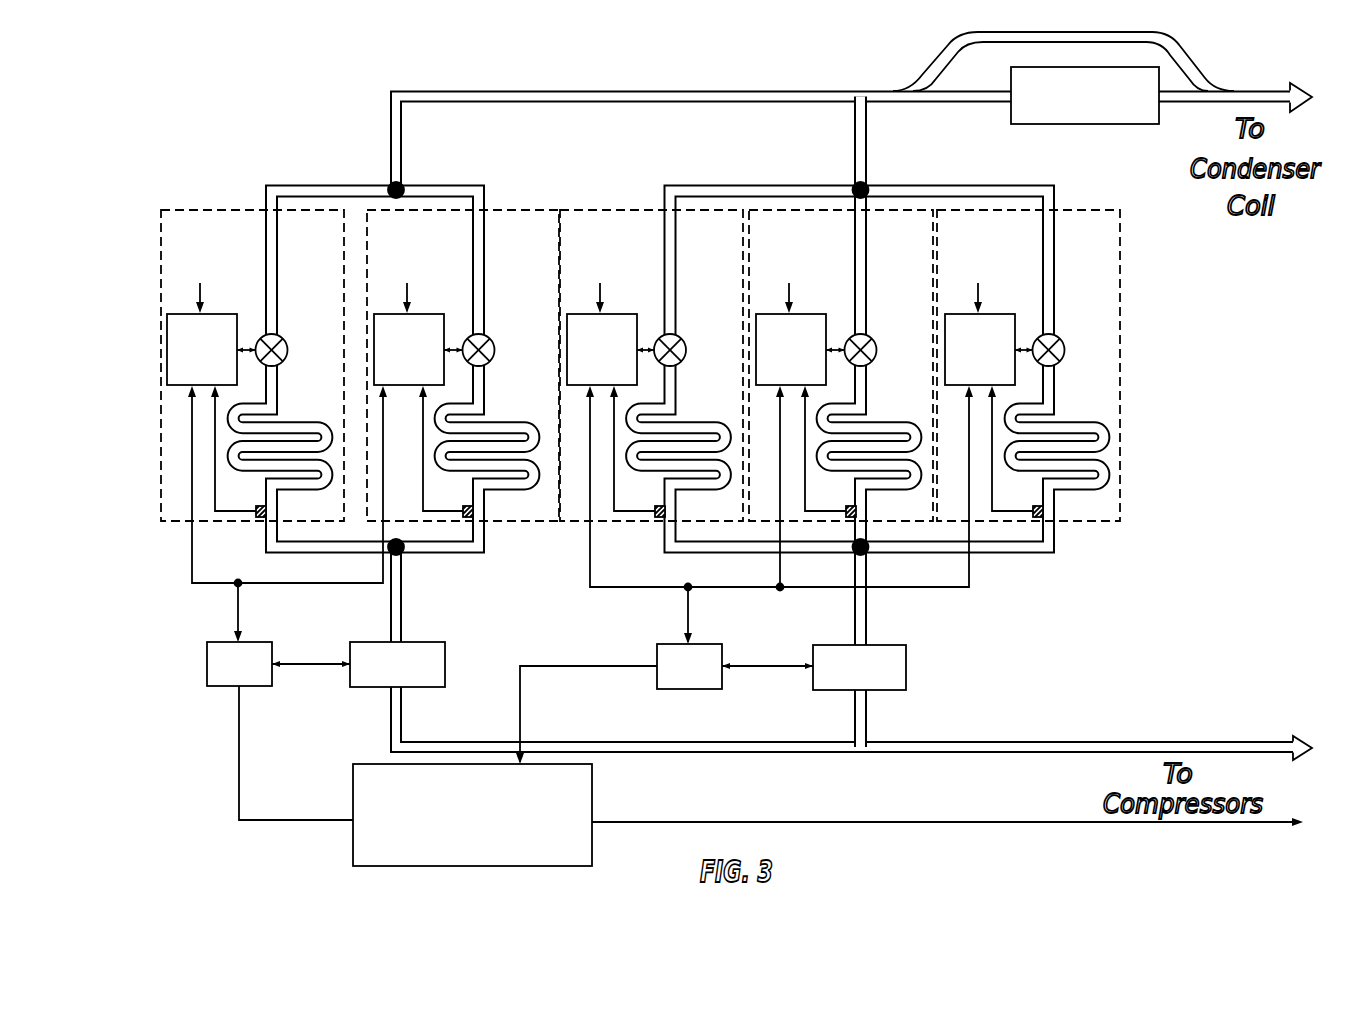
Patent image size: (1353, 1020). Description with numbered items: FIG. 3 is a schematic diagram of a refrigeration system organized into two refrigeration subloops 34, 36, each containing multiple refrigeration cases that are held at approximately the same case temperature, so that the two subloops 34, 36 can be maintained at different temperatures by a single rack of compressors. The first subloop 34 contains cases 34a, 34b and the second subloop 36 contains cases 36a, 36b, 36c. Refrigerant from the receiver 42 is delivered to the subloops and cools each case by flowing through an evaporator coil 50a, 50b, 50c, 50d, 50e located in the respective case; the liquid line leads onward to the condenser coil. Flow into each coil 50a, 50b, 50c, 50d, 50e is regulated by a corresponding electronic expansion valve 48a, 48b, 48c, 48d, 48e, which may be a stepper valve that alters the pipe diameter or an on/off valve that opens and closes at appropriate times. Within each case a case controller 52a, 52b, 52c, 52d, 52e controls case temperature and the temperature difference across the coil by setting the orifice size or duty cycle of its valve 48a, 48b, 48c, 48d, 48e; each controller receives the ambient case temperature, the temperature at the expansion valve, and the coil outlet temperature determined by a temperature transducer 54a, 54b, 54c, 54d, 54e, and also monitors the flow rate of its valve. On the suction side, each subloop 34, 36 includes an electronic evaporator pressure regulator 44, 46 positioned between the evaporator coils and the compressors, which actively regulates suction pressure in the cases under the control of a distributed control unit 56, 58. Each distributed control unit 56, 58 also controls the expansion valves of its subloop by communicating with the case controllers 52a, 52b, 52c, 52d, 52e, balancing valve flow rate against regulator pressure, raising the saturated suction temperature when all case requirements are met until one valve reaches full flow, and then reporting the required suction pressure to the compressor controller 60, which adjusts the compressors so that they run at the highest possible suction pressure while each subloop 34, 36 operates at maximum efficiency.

The refrigeration subloop 34 is at (490, 556).
The refrigeration subloop 36 is at (1013, 561).
The refrigeration case 34a is at (262, 340).
The refrigeration case 34b is at (469, 346).
The refrigeration case 36a is at (661, 339).
The refrigeration case 36b is at (851, 340).
The refrigeration case 36c is at (1038, 351).
The receiver 42 is at (1072, 124).
The electronic evaporator pressure regulator (EEPR) 44 is at (430, 642).
The electronic evaporator pressure regulator (EEPR) 46 is at (888, 645).
The electronic expansion valve (EEV) 48a is at (283, 339).
The electronic expansion valve (EEV) 48b is at (490, 339).
The electronic expansion valve (EEV) 48c is at (681, 339).
The electronic expansion valve (EEV) 48d is at (871, 339).
The electronic expansion valve (EEV) 48e is at (1059, 339).
The evaporator coil 50a is at (278, 423).
The evaporator coil 50b is at (485, 423).
The evaporator coil 50c is at (677, 423).
The evaporator coil 50d is at (867, 423).
The evaporator coil 50e is at (1055, 423).
The case controller 52a is at (238, 314).
The case controller 52b is at (445, 314).
The case controller 52c is at (638, 314).
The case controller 52d is at (827, 314).
The case controller 52e is at (1016, 314).
The temperature transducer 54a is at (267, 510).
The temperature transducer 54b is at (474, 510).
The temperature transducer 54c is at (666, 510).
The temperature transducer 54d is at (857, 510).
The temperature transducer 54e is at (1044, 510).
The distributed control unit (DCU) 56 is at (258, 641).
The distributed control unit (DCU) 58 is at (705, 643).
The compressor controller 60 is at (595, 793).